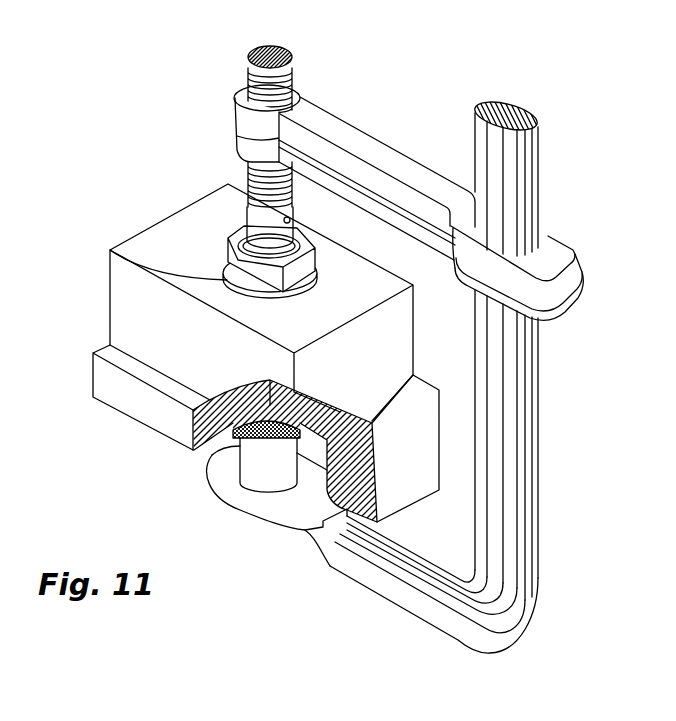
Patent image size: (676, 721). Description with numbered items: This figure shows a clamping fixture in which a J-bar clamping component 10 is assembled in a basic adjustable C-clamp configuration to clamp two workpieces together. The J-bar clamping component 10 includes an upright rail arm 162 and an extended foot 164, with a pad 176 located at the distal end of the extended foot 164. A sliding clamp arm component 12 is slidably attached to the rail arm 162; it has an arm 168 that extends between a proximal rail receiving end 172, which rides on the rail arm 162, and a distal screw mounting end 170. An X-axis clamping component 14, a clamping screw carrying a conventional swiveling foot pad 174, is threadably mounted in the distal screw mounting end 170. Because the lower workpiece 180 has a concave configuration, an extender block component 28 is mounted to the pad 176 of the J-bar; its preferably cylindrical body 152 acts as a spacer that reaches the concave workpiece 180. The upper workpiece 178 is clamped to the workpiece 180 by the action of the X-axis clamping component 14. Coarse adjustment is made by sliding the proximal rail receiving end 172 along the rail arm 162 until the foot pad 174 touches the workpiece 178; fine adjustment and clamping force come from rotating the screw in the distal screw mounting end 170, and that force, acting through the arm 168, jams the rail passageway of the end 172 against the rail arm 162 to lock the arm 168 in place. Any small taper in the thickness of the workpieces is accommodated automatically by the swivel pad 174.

The J-bar clamping component 10 is at (380, 636).
The sliding clamp arm component 12 is at (422, 140).
The X-axis clamping component 14 is at (222, 56).
The extender block component 28 is at (215, 459).
The body 152 is at (252, 468).
The rail arm 162 is at (500, 543).
The extended foot 164 is at (345, 563).
The arm 168 is at (333, 133).
The distal screw mounting end 170 is at (252, 120).
The proximal rail receiving end 172 is at (552, 257).
The swiveling foot pad 174 is at (116, 253).
The pad 176 is at (315, 502).
The workpiece 178 is at (192, 228).
The workpiece 180 is at (140, 407).